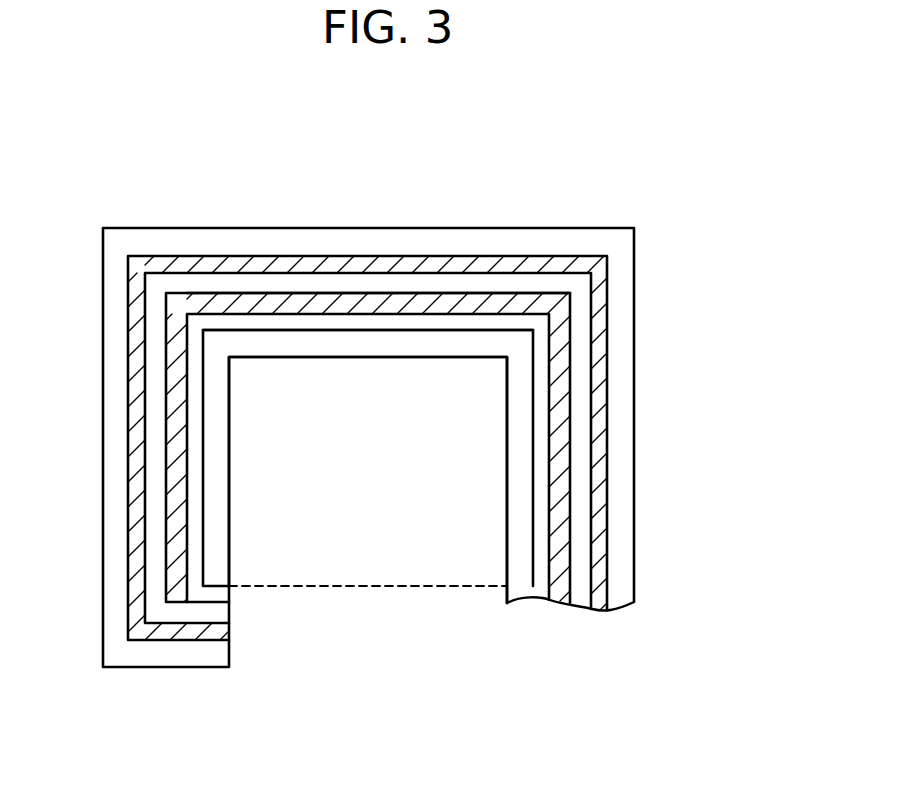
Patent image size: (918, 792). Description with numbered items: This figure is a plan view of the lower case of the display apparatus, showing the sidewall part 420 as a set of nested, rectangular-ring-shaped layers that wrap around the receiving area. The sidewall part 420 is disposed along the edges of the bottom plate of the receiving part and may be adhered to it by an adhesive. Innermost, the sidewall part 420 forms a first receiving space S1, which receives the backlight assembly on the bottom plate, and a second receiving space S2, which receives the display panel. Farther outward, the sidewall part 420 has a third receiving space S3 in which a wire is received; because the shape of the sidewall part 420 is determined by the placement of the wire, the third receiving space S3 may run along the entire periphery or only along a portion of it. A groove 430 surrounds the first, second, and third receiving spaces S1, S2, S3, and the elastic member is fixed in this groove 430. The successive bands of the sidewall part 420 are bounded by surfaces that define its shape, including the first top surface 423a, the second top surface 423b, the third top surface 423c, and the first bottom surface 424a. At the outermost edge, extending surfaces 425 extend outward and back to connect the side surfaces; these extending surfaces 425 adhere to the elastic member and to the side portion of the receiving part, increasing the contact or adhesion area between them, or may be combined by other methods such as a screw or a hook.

The sidewall part 420 is at (400, 178).
The extending surfaces 425 is at (627, 565).
The groove 430 is at (607, 525).
The third top surface 423c is at (578, 495).
The first bottom surface 424a is at (565, 453).
The second top surface 423b is at (547, 420).
The first top surface 423a is at (525, 385).
The first receiving space S1 is at (371, 376).
The second receiving space S2 is at (241, 342).
The third receiving space S3 is at (541, 304).